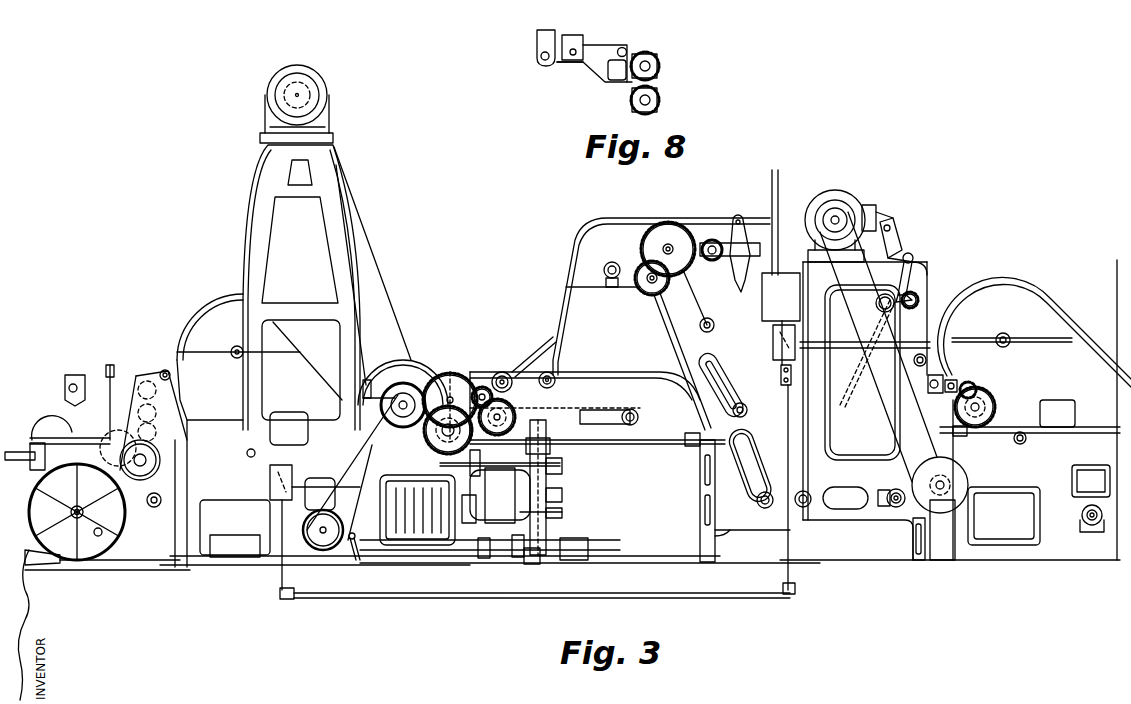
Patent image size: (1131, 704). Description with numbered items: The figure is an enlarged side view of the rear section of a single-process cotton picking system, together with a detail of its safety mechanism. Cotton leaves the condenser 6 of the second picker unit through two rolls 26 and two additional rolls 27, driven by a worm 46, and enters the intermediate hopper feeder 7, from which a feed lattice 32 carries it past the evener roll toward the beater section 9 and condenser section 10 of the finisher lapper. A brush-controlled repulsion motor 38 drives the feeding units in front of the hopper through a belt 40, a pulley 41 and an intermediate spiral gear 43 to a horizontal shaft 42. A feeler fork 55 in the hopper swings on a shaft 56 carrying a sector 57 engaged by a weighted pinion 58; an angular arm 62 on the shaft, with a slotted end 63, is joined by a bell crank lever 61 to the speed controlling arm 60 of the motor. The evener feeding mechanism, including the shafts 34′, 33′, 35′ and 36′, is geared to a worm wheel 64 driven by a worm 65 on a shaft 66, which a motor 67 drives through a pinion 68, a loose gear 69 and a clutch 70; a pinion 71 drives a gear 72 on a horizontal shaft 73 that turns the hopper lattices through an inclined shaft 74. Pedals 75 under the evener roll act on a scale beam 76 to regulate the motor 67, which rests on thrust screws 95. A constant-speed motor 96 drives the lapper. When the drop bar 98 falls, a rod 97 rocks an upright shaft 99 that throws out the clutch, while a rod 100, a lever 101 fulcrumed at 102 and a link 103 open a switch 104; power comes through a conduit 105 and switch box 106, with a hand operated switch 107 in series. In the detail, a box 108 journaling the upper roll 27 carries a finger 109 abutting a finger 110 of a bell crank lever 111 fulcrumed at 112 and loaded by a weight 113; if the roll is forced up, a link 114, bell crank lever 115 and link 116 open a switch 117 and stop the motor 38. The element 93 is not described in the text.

In FIG. 3, the condenser 6 is at (1008, 288).
In FIG. 3, the intermediate hopper feeder 7 is at (917, 272).
In FIG. 3, the beater section 9 is at (412, 362).
In FIG. 3, the condenser section 10 is at (208, 314).
In FIG. 3, the rolls 26 is at (990, 396).
In FIG. 8, the rolls 27 is at (658, 92).
In FIG. 3, the rolls 27 is at (962, 393).
In FIG. 3, the feed lattice 32 is at (566, 406).
In FIG. 3, the shaft 33′ is at (482, 387).
In FIG. 3, the shaft 34′ is at (450, 375).
In FIG. 3, the shaft 35′ is at (553, 376).
In FIG. 3, the shaft 36′ is at (505, 372).
In FIG. 3, the motor 38 is at (846, 196).
In FIG. 3, the belt 40 is at (888, 409).
In FIG. 3, the pulley 41 is at (968, 507).
In FIG. 3, the horizontal shaft 42 is at (1097, 427).
In FIG. 3, the spiral gear 43 is at (960, 468).
In FIG. 3, the worm 46 is at (968, 432).
In FIG. 3, the feeler fork 55 is at (848, 375).
In FIG. 3, the shaft 56 is at (913, 262).
In FIG. 3, the sector 57 is at (915, 286).
In FIG. 3, the weighted pinion 58 is at (920, 301).
In FIG. 3, the arm or lever 60 is at (874, 208).
In FIG. 3, the bell crank lever 61 is at (882, 216).
In FIG. 3, the angular arm 62 is at (906, 249).
In FIG. 3, the slotted end 63 is at (892, 240).
In FIG. 3, the worm wheel 64 is at (440, 440).
In FIG. 3, the worm 65 is at (468, 463).
In FIG. 3, the shaft 66 is at (492, 462).
In FIG. 3, the motor 67 is at (475, 505).
In FIG. 3, the pinion 68 is at (562, 496).
In FIG. 3, the gear 69 is at (520, 462).
In FIG. 3, the clutch 70 is at (500, 495).
In FIG. 3, the pinion 71 is at (562, 466).
In FIG. 3, the gear 72 is at (540, 430).
In FIG. 3, the horizontal shaft 73 is at (650, 446).
In FIG. 3, the inclined shaft 74 is at (712, 346).
In FIG. 3, the pedals 75 is at (410, 420).
In FIG. 3, the scale beam or lever 76 is at (575, 556).
In FIG. 3, the lever 93 is at (562, 513).
In FIG. 3, the thrust screws 95 is at (518, 558).
In FIG. 3, the motor 96 is at (266, 93).
In FIG. 3, the rod 97 is at (242, 560).
In FIG. 3, the drop bar 98 is at (174, 492).
In FIG. 3, the upright shaft 99 is at (536, 565).
In FIG. 3, the rod 100 is at (383, 546).
In FIG. 3, the lever 101 is at (318, 510).
In FIG. 3, the fulcrum 102 is at (352, 560).
In FIG. 3, the link 103 is at (293, 480).
In FIG. 3, the switch 104 is at (271, 481).
In FIG. 3, the conduit 105 is at (770, 178).
In FIG. 3, the switch box 106 is at (763, 299).
In FIG. 3, the hand operated switch 107 is at (785, 389).
In FIG. 8, the box 108 is at (654, 54).
In FIG. 8, the finger 109 is at (630, 90).
In FIG. 8, the finger 110 is at (610, 77).
In FIG. 8, the bell crank lever 111 is at (583, 64).
In FIG. 3, the bell crank lever 111 is at (930, 392).
In FIG. 8, the fulcrum 112 is at (624, 48).
In FIG. 8, the weight 113 is at (575, 35).
In FIG. 8, the link 114 is at (538, 34).
In FIG. 3, the bell crank lever 115 is at (950, 340).
In FIG. 3, the link 116 is at (780, 371).
In FIG. 3, the switch 117 is at (772, 348).